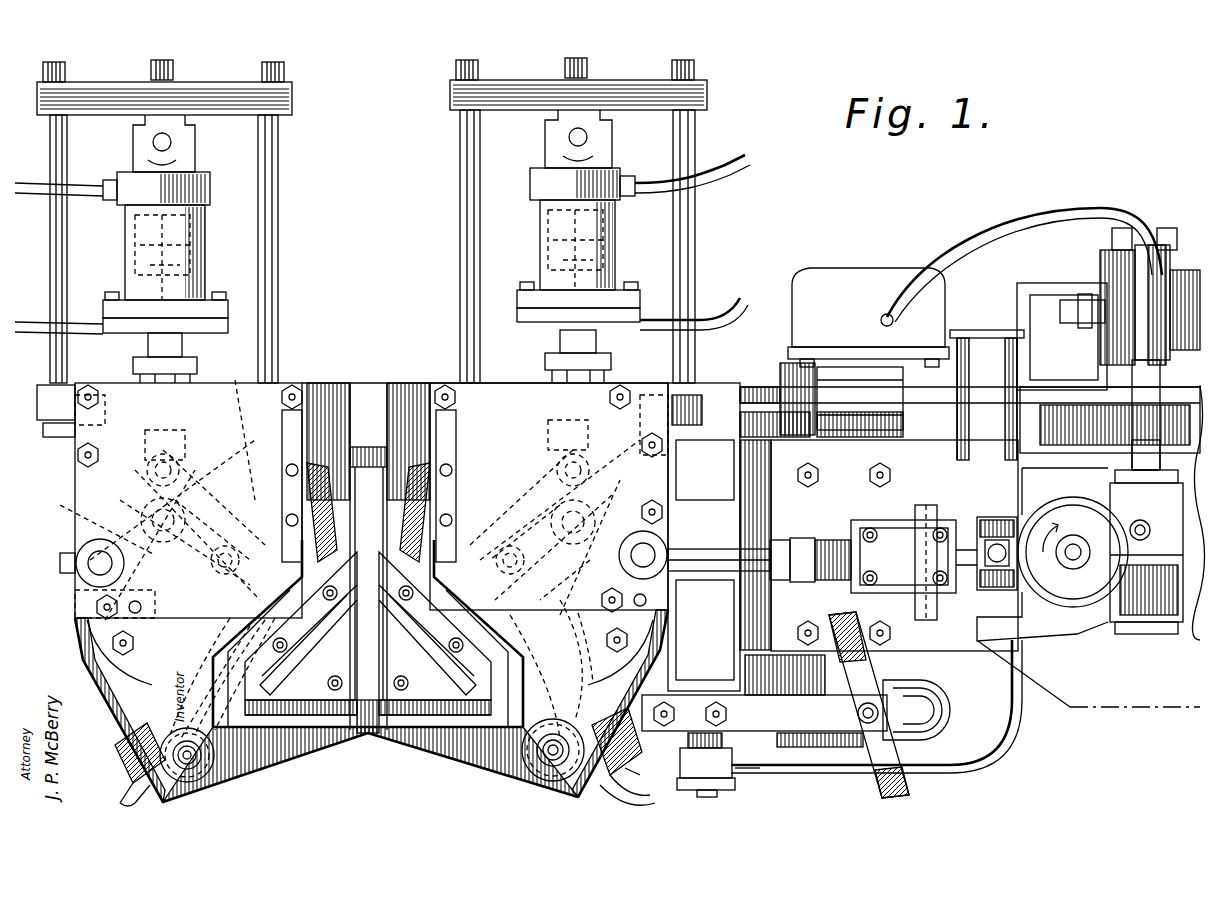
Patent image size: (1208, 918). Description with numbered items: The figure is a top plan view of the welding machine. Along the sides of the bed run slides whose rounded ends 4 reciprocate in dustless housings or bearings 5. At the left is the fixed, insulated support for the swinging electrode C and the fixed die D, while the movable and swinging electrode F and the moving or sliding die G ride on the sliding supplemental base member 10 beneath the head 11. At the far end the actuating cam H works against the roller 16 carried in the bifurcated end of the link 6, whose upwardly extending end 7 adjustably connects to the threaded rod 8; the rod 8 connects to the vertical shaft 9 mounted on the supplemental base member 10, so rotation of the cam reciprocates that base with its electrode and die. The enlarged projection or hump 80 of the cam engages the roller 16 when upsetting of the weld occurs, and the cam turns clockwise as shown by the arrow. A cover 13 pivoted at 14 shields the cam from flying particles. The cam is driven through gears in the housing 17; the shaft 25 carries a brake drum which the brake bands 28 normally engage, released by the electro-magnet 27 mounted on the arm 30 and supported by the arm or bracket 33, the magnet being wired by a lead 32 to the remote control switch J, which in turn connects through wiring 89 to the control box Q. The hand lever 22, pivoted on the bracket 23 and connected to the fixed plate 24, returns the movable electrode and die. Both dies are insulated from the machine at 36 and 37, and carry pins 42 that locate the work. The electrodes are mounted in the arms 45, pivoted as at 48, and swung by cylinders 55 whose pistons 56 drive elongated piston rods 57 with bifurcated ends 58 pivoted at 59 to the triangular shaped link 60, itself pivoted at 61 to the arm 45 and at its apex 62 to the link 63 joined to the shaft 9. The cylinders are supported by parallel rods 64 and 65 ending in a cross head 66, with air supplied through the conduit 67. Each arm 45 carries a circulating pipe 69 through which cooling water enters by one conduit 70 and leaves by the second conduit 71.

The rounded portions 4 is at (752, 398).
The dustless housings or bearings 5 is at (883, 582).
The link 6 is at (903, 556).
The upwardly extending end 7 is at (786, 540).
The rod 8 is at (716, 571).
The vertical shaft 9 is at (112, 566).
The supplemental base member 10 is at (704, 537).
The head 11 is at (656, 472).
The cover 13 is at (940, 507).
The pivot 14 is at (894, 545).
The roller 16 is at (1052, 554).
The housing 17 is at (1146, 537).
The hand lever 22 is at (920, 783).
The bracket 23 is at (764, 713).
The fixed plate 24 is at (844, 473).
The shaft 25 is at (1145, 388).
The electro-magnet 27 is at (1152, 268).
The brake bands 28 is at (1098, 295).
The arm 30 is at (1067, 307).
The lead 32 is at (1035, 212).
The arm or bracket 33 is at (1057, 322).
The insulation 36 is at (348, 738).
The insulation 37 is at (250, 700).
The pins 42 is at (305, 627).
The arms 45 is at (370, 667).
The pivot 48 is at (556, 740).
The cylinders 55 is at (197, 272).
The pistons 56 is at (200, 232).
The piston rods 57 is at (190, 428).
The bifurcated ends 58 is at (182, 463).
The pivot 59 is at (186, 500).
The triangular shaped link 60 is at (367, 511).
The pivot 61 is at (360, 556).
The pivot 62 is at (374, 528).
The link 63 is at (345, 542).
The rod 64 is at (280, 212).
The rod 65 is at (60, 242).
The cross head 66 is at (206, 92).
The conduit 67 is at (735, 172).
The circulating pipe 69 is at (128, 745).
The conduit 70 is at (387, 790).
The second conduit 71 is at (632, 770).
The enlarged projection or hump 80 is at (1036, 506).
The wiring 89 is at (812, 772).
The swinging electrode C is at (322, 523).
The movable and swinging electrode F is at (415, 525).
The fixed die D is at (290, 745).
The moving or sliding die G is at (367, 738).
The actuating cam H is at (1165, 508).
The remote control switch J is at (848, 300).
The control box Q is at (706, 765).